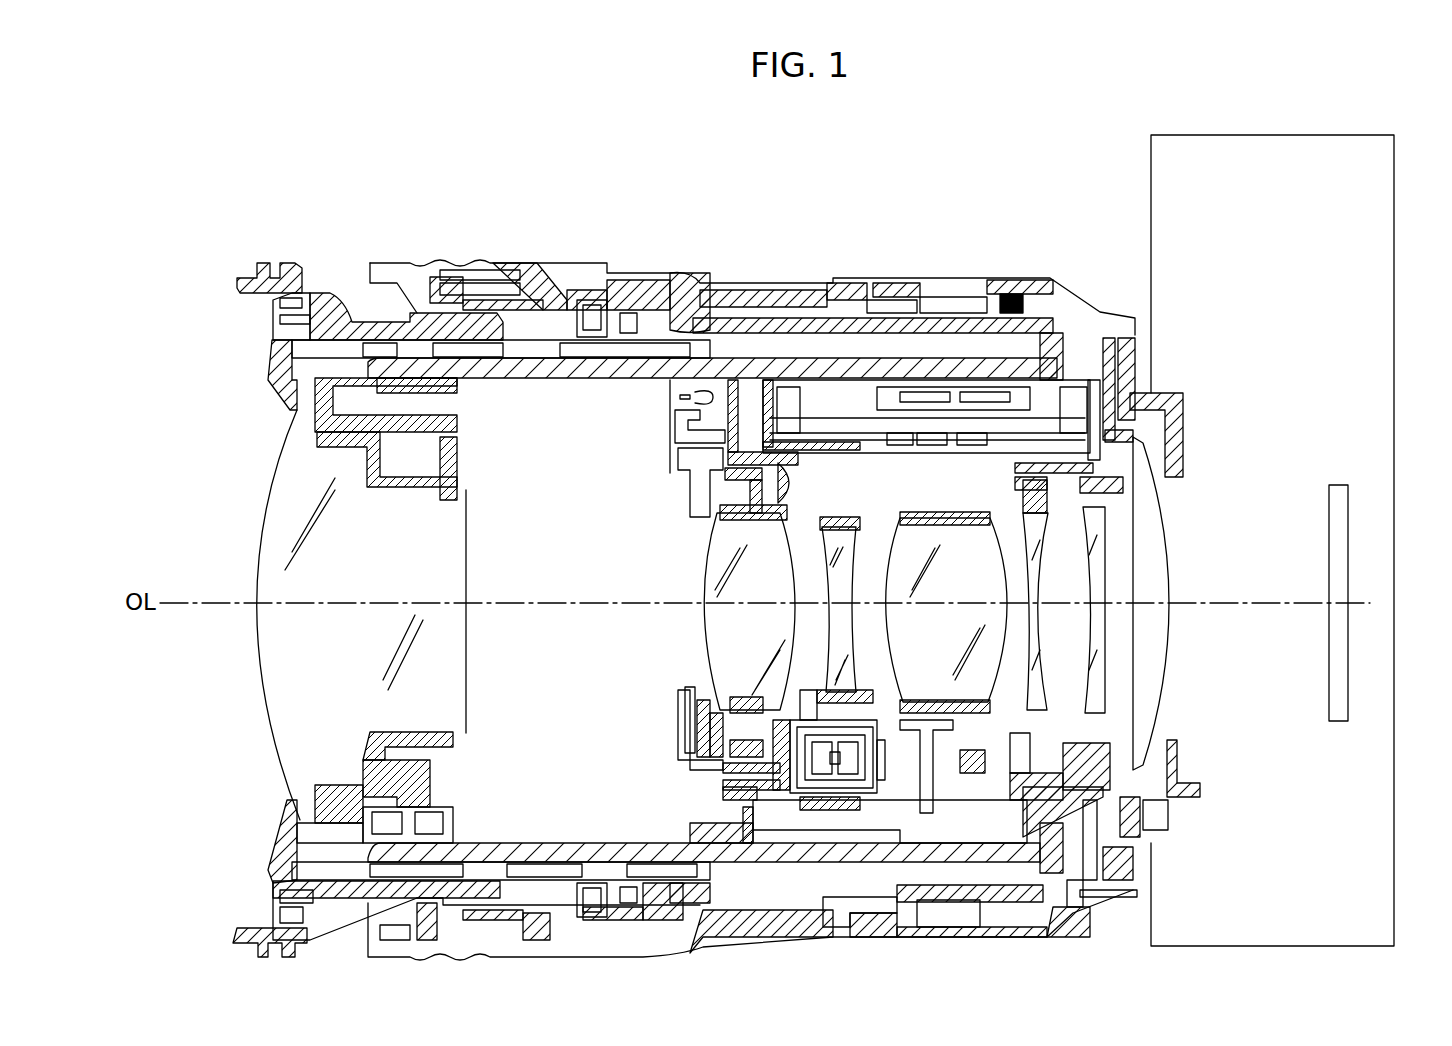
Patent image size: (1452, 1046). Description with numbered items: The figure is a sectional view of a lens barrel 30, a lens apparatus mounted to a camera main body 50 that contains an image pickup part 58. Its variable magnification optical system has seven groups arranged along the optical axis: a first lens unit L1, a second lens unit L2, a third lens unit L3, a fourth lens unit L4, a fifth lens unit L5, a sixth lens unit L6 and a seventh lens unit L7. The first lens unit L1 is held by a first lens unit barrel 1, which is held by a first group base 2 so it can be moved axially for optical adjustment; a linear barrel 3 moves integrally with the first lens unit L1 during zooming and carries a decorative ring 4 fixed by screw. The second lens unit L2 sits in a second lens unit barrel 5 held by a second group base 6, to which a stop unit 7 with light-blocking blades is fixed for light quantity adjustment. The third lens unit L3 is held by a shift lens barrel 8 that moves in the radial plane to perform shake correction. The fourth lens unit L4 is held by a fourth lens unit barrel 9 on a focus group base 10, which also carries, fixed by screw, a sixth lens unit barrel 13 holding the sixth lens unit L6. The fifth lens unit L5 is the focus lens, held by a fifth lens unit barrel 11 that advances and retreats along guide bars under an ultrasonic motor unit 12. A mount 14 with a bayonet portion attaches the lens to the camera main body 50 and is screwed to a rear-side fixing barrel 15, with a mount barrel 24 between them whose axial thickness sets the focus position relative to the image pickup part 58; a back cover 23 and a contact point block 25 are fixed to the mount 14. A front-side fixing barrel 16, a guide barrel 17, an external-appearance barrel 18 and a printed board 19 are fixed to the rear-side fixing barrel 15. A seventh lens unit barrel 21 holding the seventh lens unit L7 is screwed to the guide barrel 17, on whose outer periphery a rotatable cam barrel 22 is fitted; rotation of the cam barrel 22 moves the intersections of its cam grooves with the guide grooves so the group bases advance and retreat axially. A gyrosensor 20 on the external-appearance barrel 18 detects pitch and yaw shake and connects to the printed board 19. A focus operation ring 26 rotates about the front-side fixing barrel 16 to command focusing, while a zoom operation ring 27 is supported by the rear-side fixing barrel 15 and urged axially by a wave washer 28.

The first lens unit barrel 1 is at (323, 782).
The first group base 2 is at (458, 405).
The linear barrel 3 is at (330, 300).
The decorative ring 4 is at (268, 365).
The second lens unit barrel 5 is at (747, 697).
The second group base 6 is at (743, 413).
The stop unit 7 is at (713, 710).
The shift lens barrel 8 is at (827, 693).
The fourth lens unit barrel 9 is at (965, 752).
The focus group base 10 is at (765, 385).
The fifth lens unit barrel 11 is at (1017, 733).
The ultrasonic motor unit 12 is at (947, 387).
The sixth lens unit barrel 13 is at (1110, 723).
The mount 14 is at (1172, 392).
The rear-side fixing barrel 15 is at (1037, 323).
The front-side fixing barrel 16 is at (533, 292).
The guide barrel 17 is at (600, 368).
The external-appearance barrel 18 is at (910, 287).
The printed board 19 is at (1077, 877).
The gyrosensor 20 is at (1013, 300).
The seventh lens unit barrel 21 is at (1118, 442).
The cam barrel 22 is at (380, 348).
The back cover 23 is at (1173, 760).
The mount barrel 24 is at (1115, 335).
The contact point block 25 is at (1157, 817).
The focus operation ring 26 is at (627, 293).
The zoom operation ring 27 is at (667, 270).
The wave washer 28 is at (700, 278).
The lens barrel 30 is at (1145, 125).
The camera main body 50 is at (1396, 125).
The image pickup part 58 is at (1350, 508).
The first lens unit L1 is at (285, 510).
The second lens unit L2 is at (700, 590).
The third lens unit L3 is at (847, 627).
The fourth lens unit L4 is at (897, 587).
The fifth lens unit L5 is at (1030, 660).
The sixth lens unit L6 is at (1095, 560).
The seventh lens unit L7 is at (1178, 592).